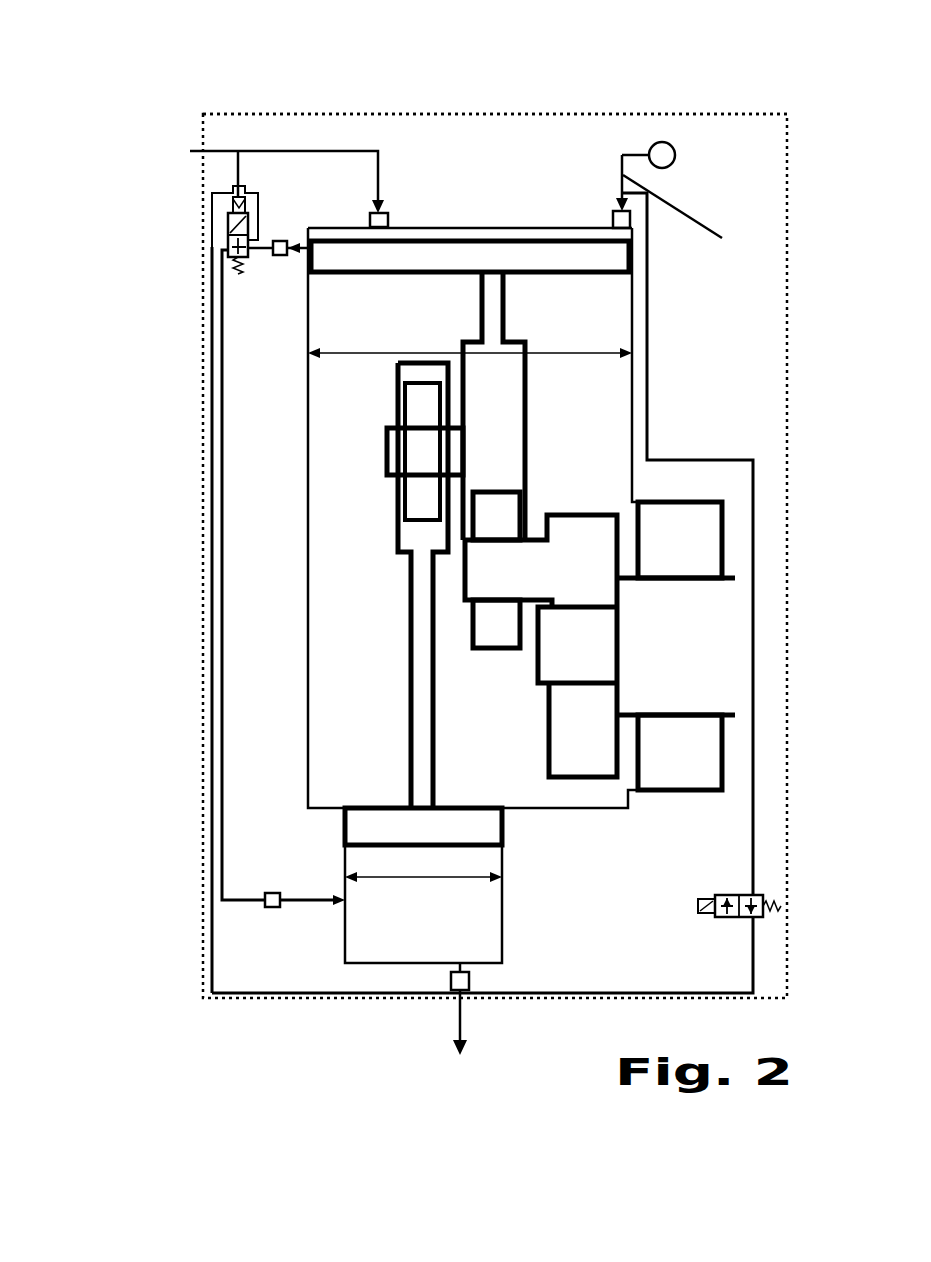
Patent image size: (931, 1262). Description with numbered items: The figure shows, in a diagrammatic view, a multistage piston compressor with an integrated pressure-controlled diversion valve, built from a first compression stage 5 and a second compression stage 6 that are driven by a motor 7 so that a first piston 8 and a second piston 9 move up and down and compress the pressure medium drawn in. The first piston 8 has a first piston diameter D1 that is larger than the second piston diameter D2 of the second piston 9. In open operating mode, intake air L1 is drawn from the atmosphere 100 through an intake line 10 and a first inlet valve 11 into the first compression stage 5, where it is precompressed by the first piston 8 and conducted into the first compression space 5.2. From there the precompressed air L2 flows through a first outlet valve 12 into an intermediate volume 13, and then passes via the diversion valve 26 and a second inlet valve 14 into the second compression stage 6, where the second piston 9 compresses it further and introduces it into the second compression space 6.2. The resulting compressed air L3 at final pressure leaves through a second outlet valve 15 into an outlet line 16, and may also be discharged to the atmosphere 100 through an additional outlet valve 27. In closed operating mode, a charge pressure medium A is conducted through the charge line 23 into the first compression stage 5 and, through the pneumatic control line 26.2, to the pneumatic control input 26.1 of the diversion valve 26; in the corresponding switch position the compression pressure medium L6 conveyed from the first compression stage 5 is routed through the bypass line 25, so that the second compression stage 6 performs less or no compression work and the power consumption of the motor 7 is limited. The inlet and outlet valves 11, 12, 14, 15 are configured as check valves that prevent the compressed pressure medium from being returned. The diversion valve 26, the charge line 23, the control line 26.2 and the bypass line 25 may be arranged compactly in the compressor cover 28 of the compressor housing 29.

The first compression stage 5 is at (690, 294).
The first compression space 5.2 is at (501, 228).
The second compression stage 6 is at (530, 871).
The second compression space 6.2 is at (456, 941).
The motor 7 is at (696, 663).
The first piston 8 is at (560, 263).
The second piston 9 is at (368, 825).
The intake line 10 is at (618, 192).
The first inlet valve 11 is at (613, 218).
The first outlet valve 12 is at (284, 258).
The intermediate volume 13 is at (222, 565).
The second inlet valve 14 is at (272, 910).
The second outlet valve 15 is at (468, 992).
The outlet line 16 is at (457, 1010).
The charge line 23 is at (222, 150).
The bypass line 25 is at (212, 450).
The diversion valve 26 is at (230, 222).
The pneumatic control input 26.1 is at (238, 200).
The pneumatic control line 26.2 is at (240, 164).
The additional outlet valve 27 is at (712, 920).
The compressor cover 28 is at (628, 124).
The compressor housing 29 is at (780, 447).
The atmosphere 100 is at (663, 166).
The charge pressure medium A is at (200, 150).
The intake air L1 is at (695, 229).
The precompressed air L2 is at (338, 897).
The compressed air L3 is at (470, 1027).
The compression pressure medium L6 is at (212, 630).
The first piston diameter D1 is at (422, 353).
The second piston diameter D2 is at (460, 878).